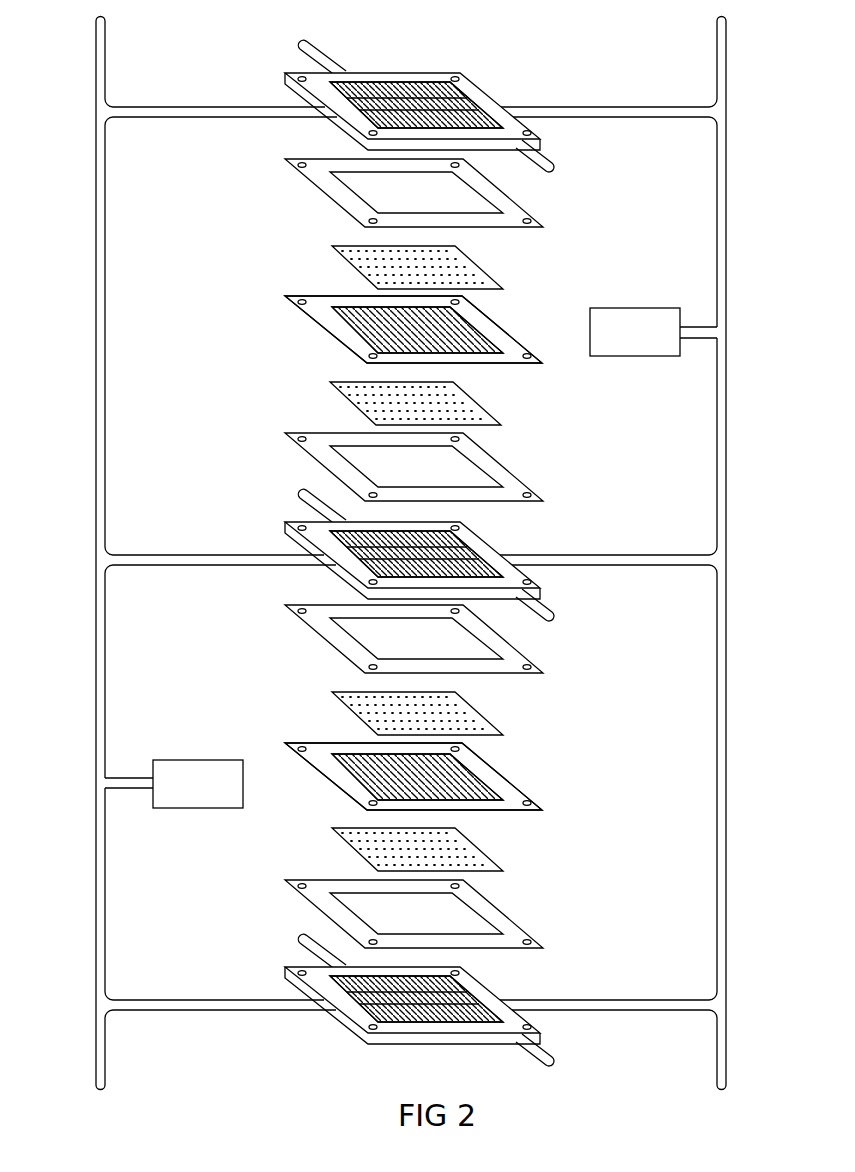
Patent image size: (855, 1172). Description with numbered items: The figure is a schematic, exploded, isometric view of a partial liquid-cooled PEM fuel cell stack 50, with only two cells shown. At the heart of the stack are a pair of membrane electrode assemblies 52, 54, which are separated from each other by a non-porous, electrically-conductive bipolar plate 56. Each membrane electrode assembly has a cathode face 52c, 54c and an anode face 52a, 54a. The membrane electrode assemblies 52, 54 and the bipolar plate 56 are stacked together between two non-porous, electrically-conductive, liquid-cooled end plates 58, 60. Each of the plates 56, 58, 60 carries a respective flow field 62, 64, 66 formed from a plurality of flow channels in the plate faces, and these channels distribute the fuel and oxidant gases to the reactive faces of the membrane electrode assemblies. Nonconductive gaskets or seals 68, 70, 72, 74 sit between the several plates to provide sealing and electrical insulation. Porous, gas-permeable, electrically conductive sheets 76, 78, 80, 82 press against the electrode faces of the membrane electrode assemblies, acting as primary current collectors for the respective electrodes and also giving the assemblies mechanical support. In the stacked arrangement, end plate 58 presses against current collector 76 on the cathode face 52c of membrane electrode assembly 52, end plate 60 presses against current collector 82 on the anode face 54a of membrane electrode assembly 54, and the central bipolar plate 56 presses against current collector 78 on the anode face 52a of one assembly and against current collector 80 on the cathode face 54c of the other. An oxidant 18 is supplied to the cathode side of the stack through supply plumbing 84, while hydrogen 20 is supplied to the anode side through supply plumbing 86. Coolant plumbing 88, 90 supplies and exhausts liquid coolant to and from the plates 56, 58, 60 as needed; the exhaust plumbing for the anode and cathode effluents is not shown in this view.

The oxidant 18 is at (615, 308).
The hydrogen 20 is at (228, 760).
The PEM fuel cell stack 50 is at (423, 553).
The membrane electrode assembly 52 is at (330, 333).
The anode face 52a is at (470, 355).
The cathode face 52c is at (470, 330).
The membrane electrode assembly 54 is at (505, 775).
The anode face 54a is at (365, 797).
The cathode face 54c is at (350, 757).
The bipolar plate 56 is at (290, 516).
The end plate 58 is at (292, 88).
The end plate 60 is at (480, 975).
The flow field 62 is at (330, 118).
The flow field 64 is at (460, 548).
The flow field 66 is at (367, 1008).
The gasket 68 is at (345, 200).
The gasket 70 is at (300, 448).
The gasket 72 is at (513, 655).
The gasket 74 is at (500, 913).
The electrically conductive sheet 76 is at (350, 252).
The electrically conductive sheet 78 is at (360, 395).
The electrically conductive sheet 80 is at (470, 718).
The electrically conductive sheet 82 is at (477, 853).
The supply plumbing 84 is at (726, 452).
The supply plumbing 86 is at (96, 890).
The coolant plumbing 88 is at (313, 55).
The coolant plumbing 90 is at (547, 156).